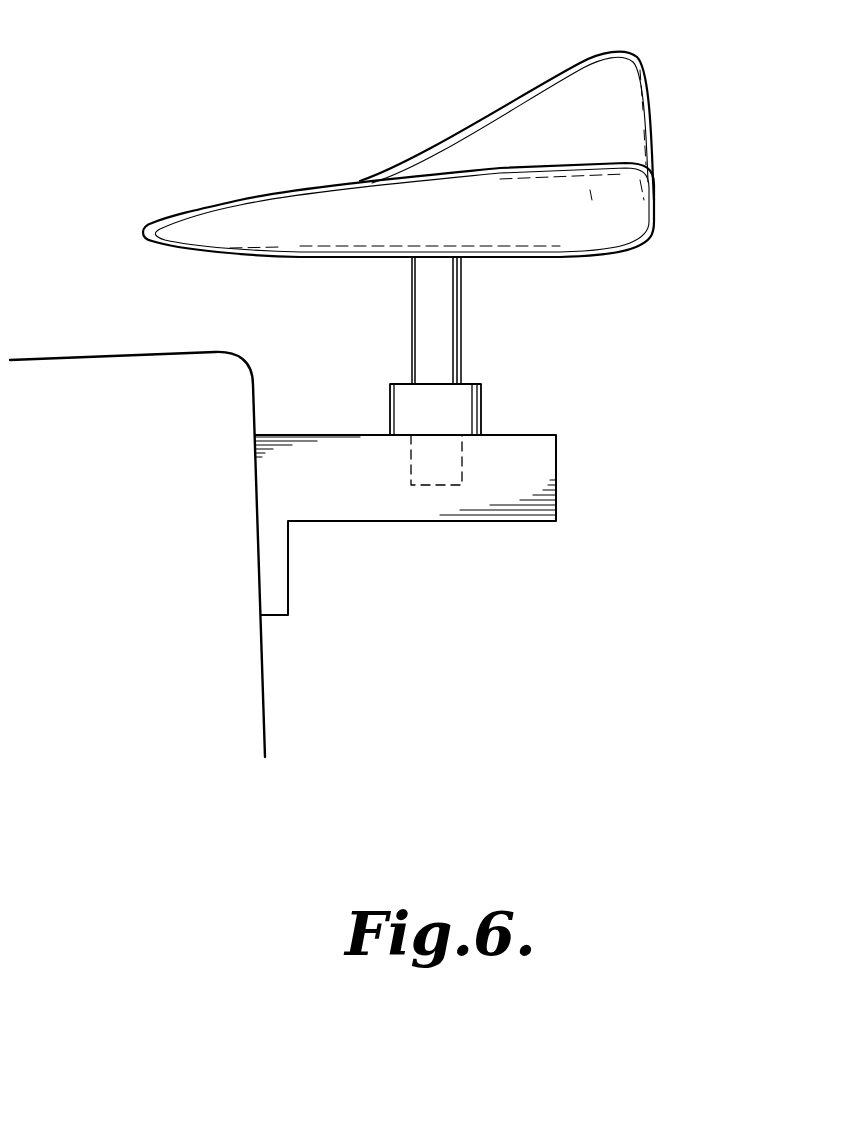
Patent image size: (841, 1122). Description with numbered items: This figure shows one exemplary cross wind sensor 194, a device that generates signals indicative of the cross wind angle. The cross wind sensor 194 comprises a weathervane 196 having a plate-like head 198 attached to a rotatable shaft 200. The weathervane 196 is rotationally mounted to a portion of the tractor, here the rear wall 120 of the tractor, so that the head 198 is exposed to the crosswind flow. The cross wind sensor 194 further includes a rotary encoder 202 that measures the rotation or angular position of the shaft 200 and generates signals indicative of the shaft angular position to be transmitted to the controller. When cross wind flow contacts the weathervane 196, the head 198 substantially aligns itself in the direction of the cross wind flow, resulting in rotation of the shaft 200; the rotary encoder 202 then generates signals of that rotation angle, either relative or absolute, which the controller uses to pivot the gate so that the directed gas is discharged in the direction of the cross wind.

The cross wind sensor 194 is at (218, 86).
The weathervane 196 is at (618, 304).
The plate-like head 198 is at (630, 142).
The rotatable shaft 200 is at (415, 316).
The rotary encoder 202 is at (482, 393).
The rear surface 120 is at (263, 663).